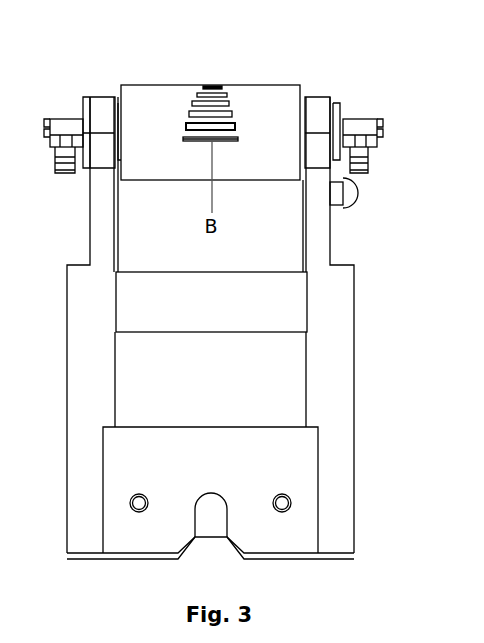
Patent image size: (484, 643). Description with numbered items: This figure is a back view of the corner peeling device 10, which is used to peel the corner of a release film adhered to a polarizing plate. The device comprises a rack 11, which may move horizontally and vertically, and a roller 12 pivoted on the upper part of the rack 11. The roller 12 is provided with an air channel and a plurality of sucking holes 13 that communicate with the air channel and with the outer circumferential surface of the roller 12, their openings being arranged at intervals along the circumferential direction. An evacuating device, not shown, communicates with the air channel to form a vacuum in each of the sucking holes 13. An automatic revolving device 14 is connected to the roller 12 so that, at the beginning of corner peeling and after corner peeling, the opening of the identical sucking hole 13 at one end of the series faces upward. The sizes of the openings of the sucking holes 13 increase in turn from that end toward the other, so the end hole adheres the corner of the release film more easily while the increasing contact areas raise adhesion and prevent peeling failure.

The corner peeling device 10 is at (345, 248).
The rack 11 is at (340, 385).
The roller 12 is at (268, 108).
The sucking holes 13 is at (210, 100).
The automatic revolving device 14 is at (358, 193).